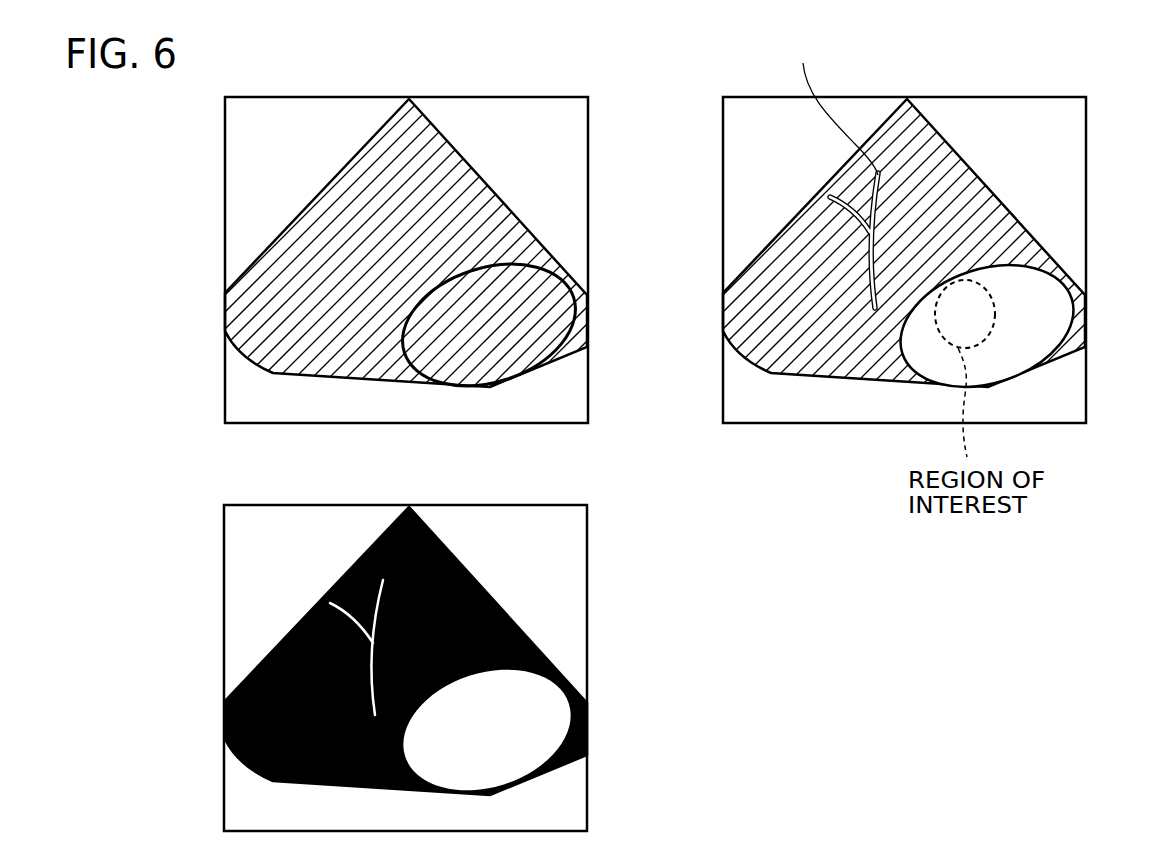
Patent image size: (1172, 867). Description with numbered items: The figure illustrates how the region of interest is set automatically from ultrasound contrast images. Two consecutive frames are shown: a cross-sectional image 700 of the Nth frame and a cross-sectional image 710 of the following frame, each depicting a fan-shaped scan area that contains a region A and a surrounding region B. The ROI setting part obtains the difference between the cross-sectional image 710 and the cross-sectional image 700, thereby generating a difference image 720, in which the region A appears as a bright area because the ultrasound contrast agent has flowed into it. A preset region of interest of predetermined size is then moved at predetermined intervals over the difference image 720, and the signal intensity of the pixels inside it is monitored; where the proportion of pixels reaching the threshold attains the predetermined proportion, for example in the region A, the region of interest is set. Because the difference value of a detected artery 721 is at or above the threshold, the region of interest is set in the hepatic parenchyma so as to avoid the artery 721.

The cross-sectional image 700 is at (458, 126).
The cross-sectional image 710 is at (956, 126).
The difference image 720 is at (480, 556).
The artery 721 is at (330, 566).
The region A is at (535, 280).
The region B is at (487, 203).